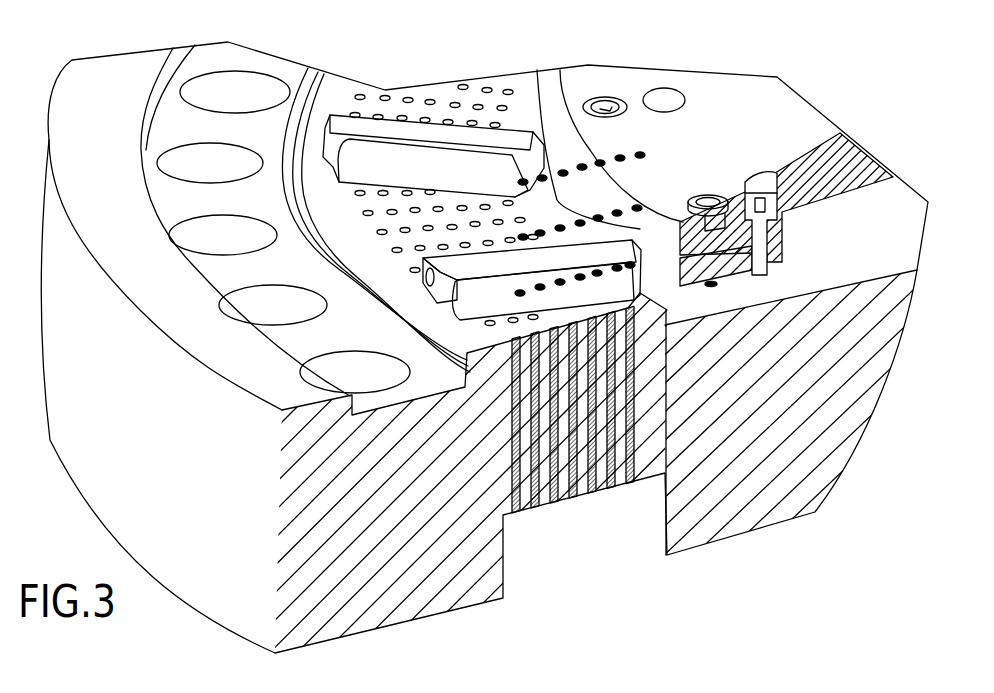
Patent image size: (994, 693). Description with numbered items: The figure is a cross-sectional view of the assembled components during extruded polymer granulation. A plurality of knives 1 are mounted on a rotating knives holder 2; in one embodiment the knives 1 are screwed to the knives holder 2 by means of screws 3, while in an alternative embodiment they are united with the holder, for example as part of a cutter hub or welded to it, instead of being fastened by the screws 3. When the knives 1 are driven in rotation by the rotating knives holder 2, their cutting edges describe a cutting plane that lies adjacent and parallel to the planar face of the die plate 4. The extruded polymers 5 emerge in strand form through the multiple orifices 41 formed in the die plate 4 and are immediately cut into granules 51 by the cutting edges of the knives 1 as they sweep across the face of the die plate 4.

The knives 1 is at (338, 110).
The rotating knives holder 2 is at (867, 157).
The screws 3 is at (612, 112).
The die plate 4 is at (802, 453).
The orifices 41 is at (487, 90).
The extruded polymers 5 is at (575, 494).
The granules 51 is at (633, 207).